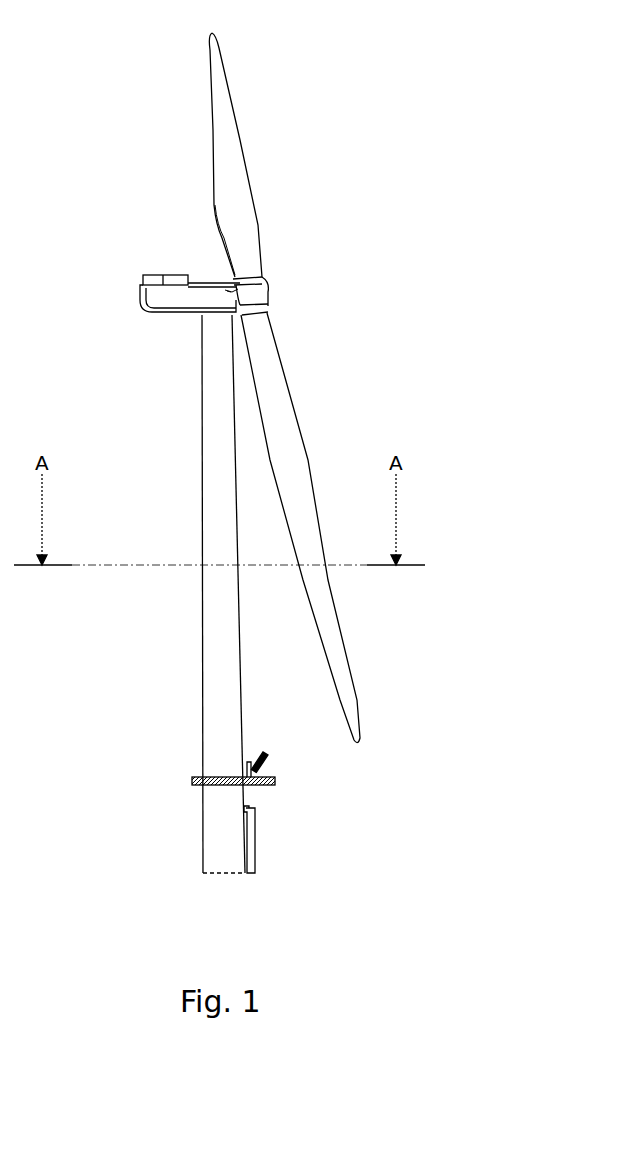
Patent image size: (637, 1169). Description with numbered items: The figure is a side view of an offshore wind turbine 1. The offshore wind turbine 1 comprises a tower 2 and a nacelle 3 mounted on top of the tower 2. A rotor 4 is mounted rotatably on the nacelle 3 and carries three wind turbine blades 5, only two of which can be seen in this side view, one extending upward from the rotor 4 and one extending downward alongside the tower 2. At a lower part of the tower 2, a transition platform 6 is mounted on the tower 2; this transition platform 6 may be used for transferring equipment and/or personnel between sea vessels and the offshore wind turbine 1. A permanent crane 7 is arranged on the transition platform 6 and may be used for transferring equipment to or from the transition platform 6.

The offshore wind turbine 1 is at (438, 95).
The tower 2 is at (216, 447).
The nacelle 3 is at (162, 298).
The rotor 4 is at (272, 290).
The wind turbine blades 5 is at (230, 130).
The transition platform 6 is at (207, 777).
The permanent crane 7 is at (262, 760).